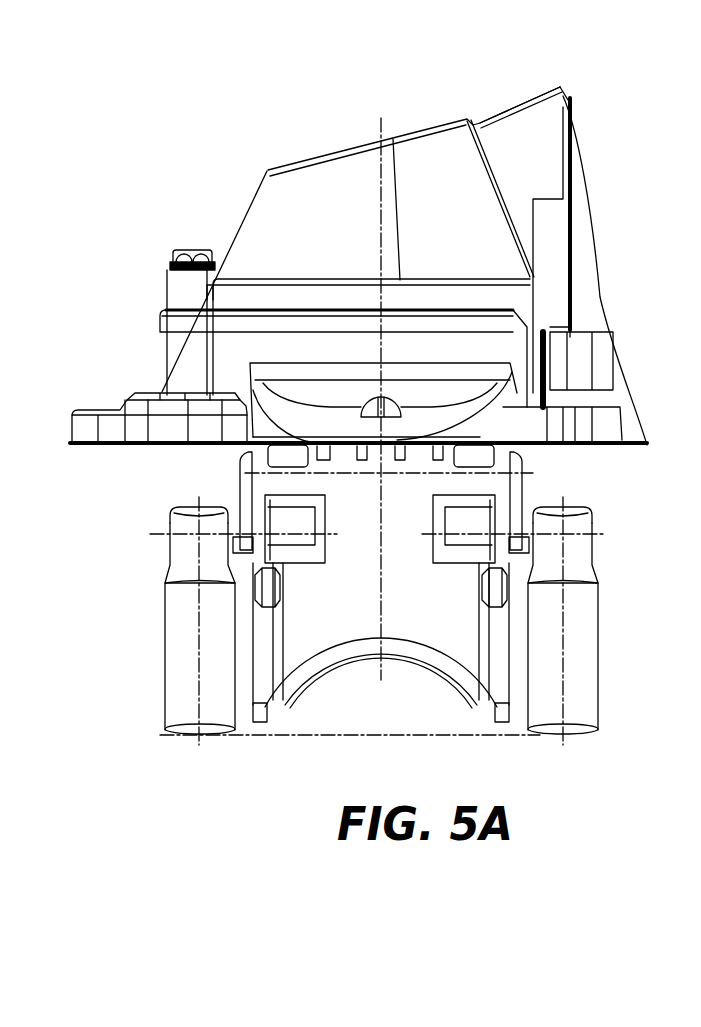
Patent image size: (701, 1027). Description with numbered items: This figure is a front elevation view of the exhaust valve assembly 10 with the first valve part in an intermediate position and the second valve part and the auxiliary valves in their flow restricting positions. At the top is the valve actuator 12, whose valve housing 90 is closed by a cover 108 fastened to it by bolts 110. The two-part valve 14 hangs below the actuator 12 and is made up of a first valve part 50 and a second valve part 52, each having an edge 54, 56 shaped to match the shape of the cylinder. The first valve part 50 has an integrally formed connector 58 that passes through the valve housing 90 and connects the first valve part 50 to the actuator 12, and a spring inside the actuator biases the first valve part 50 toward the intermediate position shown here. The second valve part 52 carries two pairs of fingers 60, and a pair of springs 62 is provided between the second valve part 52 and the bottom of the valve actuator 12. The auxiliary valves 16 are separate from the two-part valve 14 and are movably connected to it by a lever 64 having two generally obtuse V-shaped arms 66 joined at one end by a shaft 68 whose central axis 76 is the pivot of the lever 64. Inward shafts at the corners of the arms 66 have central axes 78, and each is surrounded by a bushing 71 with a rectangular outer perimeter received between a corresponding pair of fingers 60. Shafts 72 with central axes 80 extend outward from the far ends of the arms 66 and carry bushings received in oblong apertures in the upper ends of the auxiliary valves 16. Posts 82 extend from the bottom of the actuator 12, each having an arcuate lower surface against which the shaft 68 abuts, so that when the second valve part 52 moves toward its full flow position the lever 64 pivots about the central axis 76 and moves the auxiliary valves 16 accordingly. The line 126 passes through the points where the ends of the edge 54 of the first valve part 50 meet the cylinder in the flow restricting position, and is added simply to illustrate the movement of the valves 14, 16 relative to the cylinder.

The exhaust valve assembly 10 is at (239, 128).
The valve actuator 12 is at (417, 157).
The two-part valve 14 is at (393, 736).
The auxiliary valves 16 is at (180, 683).
The first valve part 50 is at (457, 633).
The second valve part 52 is at (260, 717).
The edge 54 is at (337, 655).
The edge 56 is at (363, 668).
The connector 58 is at (450, 440).
The fingers 60 is at (483, 500).
The springs 62 is at (247, 400).
The lever 64 is at (577, 474).
The arms 66 is at (257, 493).
The shaft 68 is at (350, 463).
The bushing 71 is at (243, 536).
The shafts 72 is at (227, 583).
The central axis 76 is at (338, 477).
The central axes 78 is at (308, 520).
The central axes 80 is at (190, 534).
The posts 82 is at (267, 450).
The valve housing 90 is at (437, 365).
The cover 108 is at (508, 130).
The bolts 110 is at (175, 253).
The line 126 is at (497, 737).